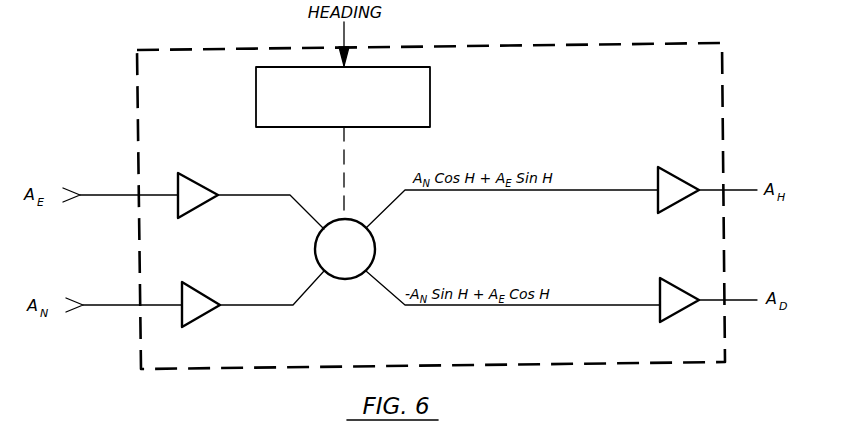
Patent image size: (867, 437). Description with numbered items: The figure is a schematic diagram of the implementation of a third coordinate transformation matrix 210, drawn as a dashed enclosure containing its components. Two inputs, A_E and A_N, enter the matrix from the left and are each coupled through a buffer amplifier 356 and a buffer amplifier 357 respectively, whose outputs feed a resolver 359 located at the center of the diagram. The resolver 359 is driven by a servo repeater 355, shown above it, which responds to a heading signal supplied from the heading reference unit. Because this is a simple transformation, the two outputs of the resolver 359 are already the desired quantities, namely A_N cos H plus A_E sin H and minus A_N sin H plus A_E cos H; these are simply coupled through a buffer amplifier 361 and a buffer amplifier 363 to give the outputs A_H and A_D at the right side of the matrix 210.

The coordinate transformation matrix 210 is at (637, 43).
The servo repeater 355 is at (430, 108).
The buffer amplifier 356 is at (207, 185).
The buffer amplifier 357 is at (205, 293).
The resolver 359 is at (349, 279).
The buffer amplifier 361 is at (673, 172).
The buffer amplifier 363 is at (678, 282).